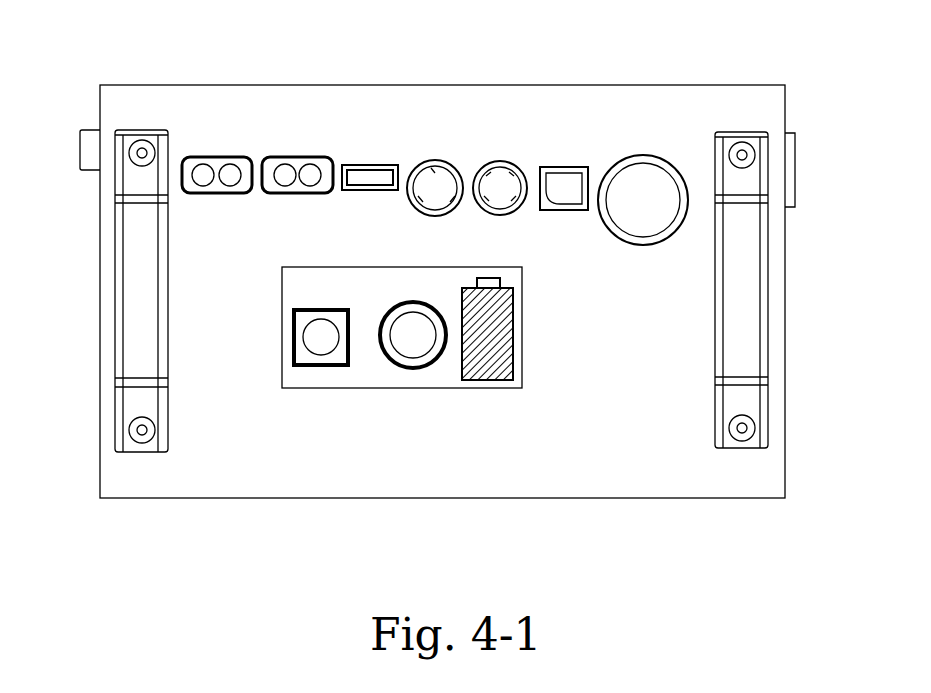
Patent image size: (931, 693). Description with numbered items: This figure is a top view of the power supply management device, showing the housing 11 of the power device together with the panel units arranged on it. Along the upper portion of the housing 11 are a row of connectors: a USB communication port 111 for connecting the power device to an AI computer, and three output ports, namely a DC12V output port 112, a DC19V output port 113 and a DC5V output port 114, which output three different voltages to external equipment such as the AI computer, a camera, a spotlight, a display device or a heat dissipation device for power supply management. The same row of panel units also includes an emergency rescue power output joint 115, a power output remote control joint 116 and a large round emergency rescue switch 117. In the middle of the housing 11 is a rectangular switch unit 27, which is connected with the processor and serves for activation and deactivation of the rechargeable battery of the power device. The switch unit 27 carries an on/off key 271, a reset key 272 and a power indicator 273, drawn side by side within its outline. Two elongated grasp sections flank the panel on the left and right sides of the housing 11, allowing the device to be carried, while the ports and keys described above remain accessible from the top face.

The housing 11 is at (148, 85).
The switch unit 27 is at (345, 388).
The USB communication port 111 is at (562, 167).
The DC12V output port 112 is at (497, 161).
The DC19V output port 113 is at (433, 160).
The DC5V output port 114 is at (370, 165).
The emergency rescue power output joint 115 is at (298, 157).
The power output remote control joint 116 is at (217, 157).
The emergency rescue switch 117 is at (643, 155).
The on/off key 271 is at (412, 388).
The reset key 272 is at (295, 368).
The power indicator 273 is at (488, 388).